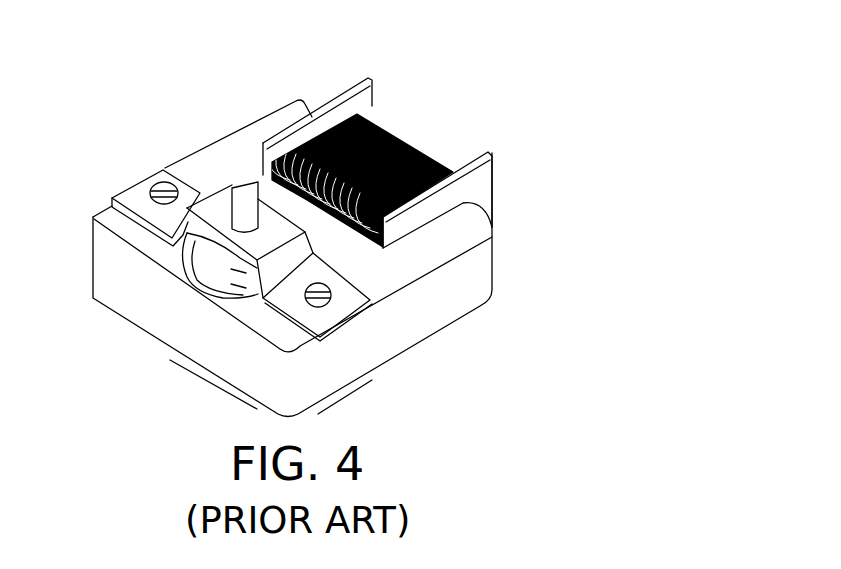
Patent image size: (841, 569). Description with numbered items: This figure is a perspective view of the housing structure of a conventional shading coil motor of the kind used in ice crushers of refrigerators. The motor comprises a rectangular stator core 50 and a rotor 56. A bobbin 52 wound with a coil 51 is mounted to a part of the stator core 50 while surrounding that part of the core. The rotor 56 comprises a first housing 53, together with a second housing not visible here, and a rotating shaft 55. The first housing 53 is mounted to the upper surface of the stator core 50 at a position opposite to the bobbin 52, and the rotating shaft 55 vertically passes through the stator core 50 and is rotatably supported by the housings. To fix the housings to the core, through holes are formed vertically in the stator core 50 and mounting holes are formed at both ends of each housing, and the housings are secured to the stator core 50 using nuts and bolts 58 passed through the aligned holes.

The stator core 50 is at (358, 360).
The coil 51 is at (400, 140).
The bobbin 52 is at (485, 192).
The first housing 53 is at (308, 258).
The rotating shaft 55 is at (236, 184).
The rotor 56 is at (202, 285).
The bolt 58 is at (161, 182).